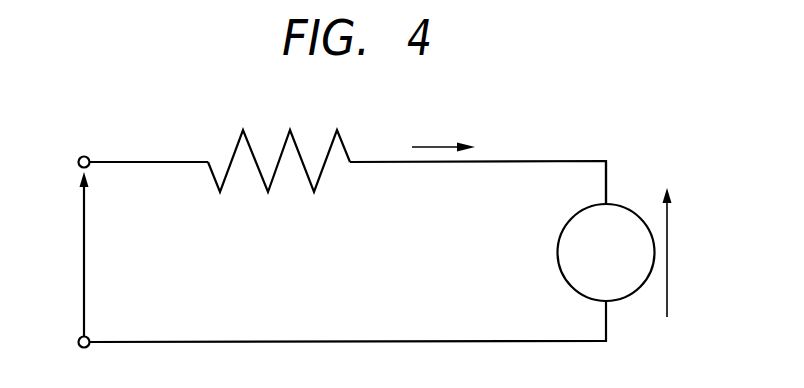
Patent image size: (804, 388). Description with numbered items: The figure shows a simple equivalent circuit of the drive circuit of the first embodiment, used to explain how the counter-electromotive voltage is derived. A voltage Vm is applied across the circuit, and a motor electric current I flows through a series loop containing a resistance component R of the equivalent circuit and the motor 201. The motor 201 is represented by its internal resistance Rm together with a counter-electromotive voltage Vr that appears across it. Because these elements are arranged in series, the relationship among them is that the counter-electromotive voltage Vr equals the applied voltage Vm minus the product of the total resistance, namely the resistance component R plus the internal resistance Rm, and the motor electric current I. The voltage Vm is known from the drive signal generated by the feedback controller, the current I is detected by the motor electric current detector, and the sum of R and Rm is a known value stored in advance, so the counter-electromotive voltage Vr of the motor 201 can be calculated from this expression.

The motor 201 is at (630, 297).
The resistance component R is at (279, 176).
The internal resistance Rm is at (584, 182).
The voltage applied to the motor Vm is at (65, 254).
The counter-electromotive voltage Vr is at (682, 252).
The motor electric current I is at (442, 145).